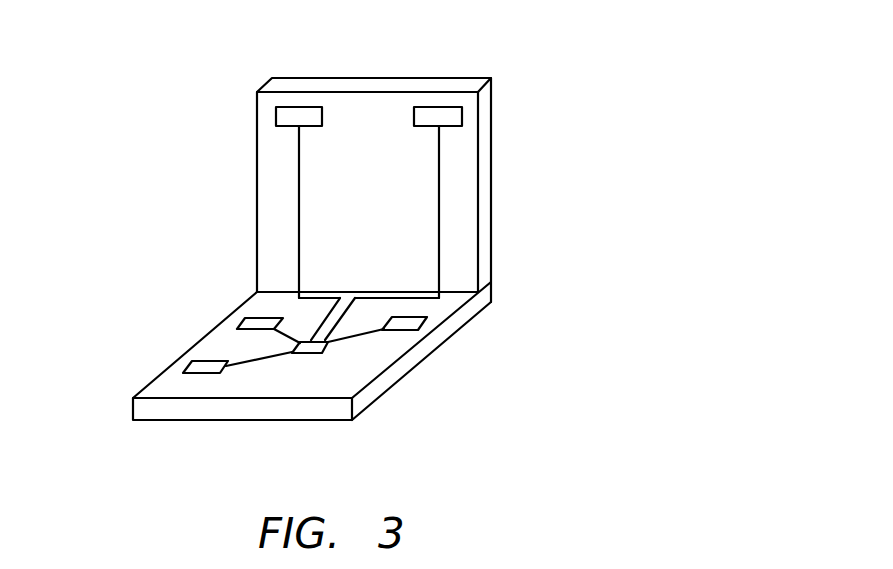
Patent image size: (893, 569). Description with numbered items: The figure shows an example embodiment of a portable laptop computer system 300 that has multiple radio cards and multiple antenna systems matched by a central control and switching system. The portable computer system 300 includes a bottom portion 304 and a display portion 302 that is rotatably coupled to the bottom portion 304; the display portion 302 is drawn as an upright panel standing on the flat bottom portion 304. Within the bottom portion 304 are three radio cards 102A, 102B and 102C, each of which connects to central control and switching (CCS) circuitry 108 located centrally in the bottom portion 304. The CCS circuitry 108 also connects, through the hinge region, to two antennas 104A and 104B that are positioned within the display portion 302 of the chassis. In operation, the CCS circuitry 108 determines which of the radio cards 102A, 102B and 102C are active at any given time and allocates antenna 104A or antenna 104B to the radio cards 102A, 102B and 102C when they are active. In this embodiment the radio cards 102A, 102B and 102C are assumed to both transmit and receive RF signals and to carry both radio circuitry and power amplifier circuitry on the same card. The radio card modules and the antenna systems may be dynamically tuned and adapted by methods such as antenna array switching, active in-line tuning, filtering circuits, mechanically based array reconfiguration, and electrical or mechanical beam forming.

The portable laptop computer system 300 is at (604, 44).
The display portion 302 is at (257, 190).
The bottom portion 304 is at (133, 398).
The antenna 104A is at (290, 107).
The antenna 104B is at (431, 107).
The radio card 102A is at (188, 362).
The radio card 102B is at (243, 322).
The radio card 102C is at (422, 328).
The central control and switching (CCS) circuitry 108 is at (323, 353).